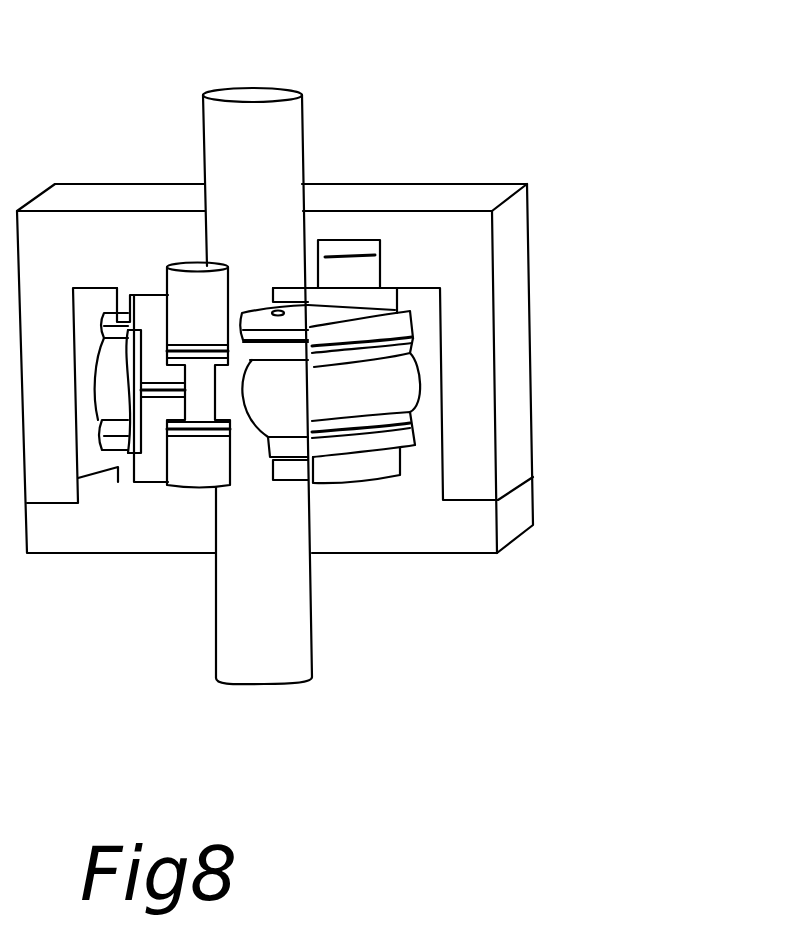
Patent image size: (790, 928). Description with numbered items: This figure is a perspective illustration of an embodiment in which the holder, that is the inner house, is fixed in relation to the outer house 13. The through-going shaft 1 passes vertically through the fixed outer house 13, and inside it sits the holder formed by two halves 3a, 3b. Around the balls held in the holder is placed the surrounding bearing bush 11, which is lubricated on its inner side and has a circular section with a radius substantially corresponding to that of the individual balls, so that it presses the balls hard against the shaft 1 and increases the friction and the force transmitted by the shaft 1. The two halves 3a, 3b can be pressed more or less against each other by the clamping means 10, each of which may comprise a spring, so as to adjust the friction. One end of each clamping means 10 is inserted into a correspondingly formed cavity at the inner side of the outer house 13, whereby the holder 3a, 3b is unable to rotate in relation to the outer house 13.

The shaft 1 is at (280, 135).
The clamping means 10 is at (185, 268).
The bearing bush 11 is at (408, 378).
The outer house 13 is at (485, 260).
The half of the inner house 3a is at (378, 309).
The half of the inner house 3b is at (390, 464).